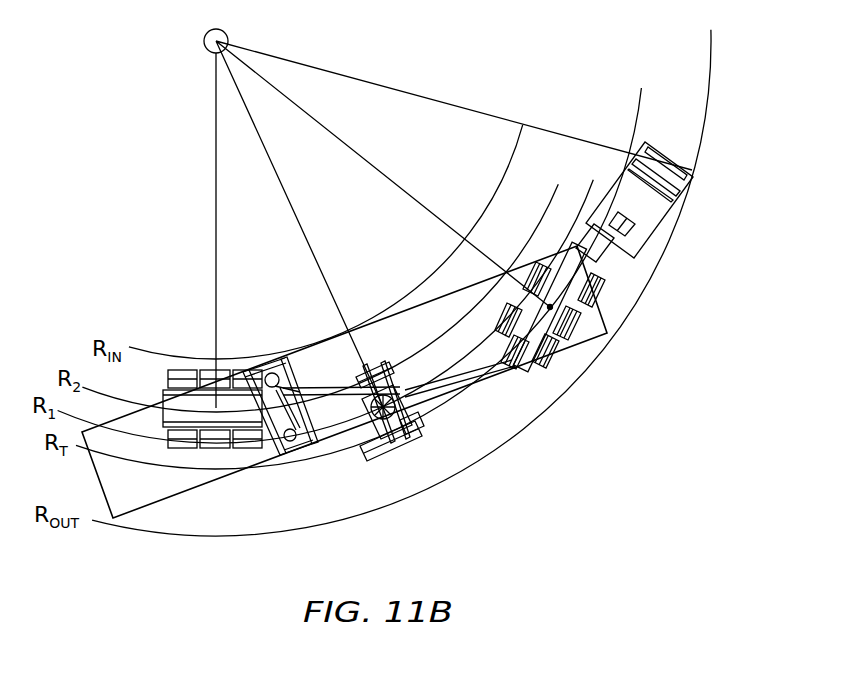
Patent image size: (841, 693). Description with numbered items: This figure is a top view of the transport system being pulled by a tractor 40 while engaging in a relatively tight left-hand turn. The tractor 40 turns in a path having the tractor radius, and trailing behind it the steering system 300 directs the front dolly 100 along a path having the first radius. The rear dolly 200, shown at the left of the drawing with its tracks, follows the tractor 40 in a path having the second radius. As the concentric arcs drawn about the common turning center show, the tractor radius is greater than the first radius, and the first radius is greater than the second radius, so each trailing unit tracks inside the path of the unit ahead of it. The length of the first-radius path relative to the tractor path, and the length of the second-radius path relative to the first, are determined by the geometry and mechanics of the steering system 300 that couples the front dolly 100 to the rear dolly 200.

The tractor 40 is at (620, 280).
The front dolly 100 is at (549, 316).
The rear dolly 200 is at (220, 449).
The steering system 300 is at (330, 430).